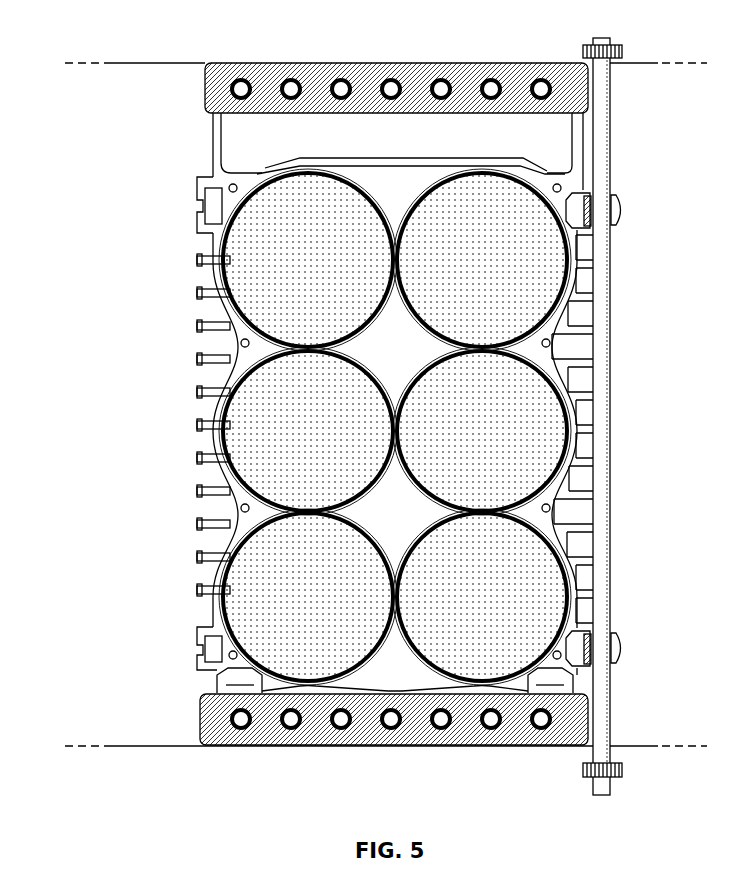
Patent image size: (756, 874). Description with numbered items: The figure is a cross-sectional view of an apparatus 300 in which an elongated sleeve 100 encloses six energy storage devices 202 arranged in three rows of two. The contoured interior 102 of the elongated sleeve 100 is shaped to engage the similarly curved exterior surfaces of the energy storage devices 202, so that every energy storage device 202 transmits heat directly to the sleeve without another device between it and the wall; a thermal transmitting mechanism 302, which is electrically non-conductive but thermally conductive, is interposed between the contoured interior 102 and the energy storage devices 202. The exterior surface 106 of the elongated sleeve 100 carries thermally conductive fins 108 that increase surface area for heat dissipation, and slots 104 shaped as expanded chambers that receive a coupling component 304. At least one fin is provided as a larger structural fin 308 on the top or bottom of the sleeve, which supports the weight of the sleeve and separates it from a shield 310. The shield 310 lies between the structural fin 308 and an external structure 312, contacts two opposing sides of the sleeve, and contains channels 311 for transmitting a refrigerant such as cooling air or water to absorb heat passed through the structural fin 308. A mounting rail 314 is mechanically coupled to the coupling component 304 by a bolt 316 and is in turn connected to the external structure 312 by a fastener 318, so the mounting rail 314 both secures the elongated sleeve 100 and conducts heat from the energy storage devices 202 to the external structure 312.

The elongated sleeve 100 is at (372, 160).
The contoured interior 102 is at (433, 168).
The slots 104 is at (210, 207).
The exterior surface 106 is at (214, 412).
The thermally conductive fins 108 is at (200, 490).
The energy storage devices 202 is at (289, 272).
The apparatus 300 is at (130, 357).
The thermal transmitting mechanism 302 is at (376, 365).
The coupling component 304 is at (588, 228).
The structural fin 308 is at (213, 145).
The shield 310 is at (588, 105).
The channels 311 is at (402, 82).
The external structure 312 is at (152, 65).
The mounting rail 314 is at (610, 360).
The bolt 316 is at (624, 210).
The fastener 318 is at (622, 52).